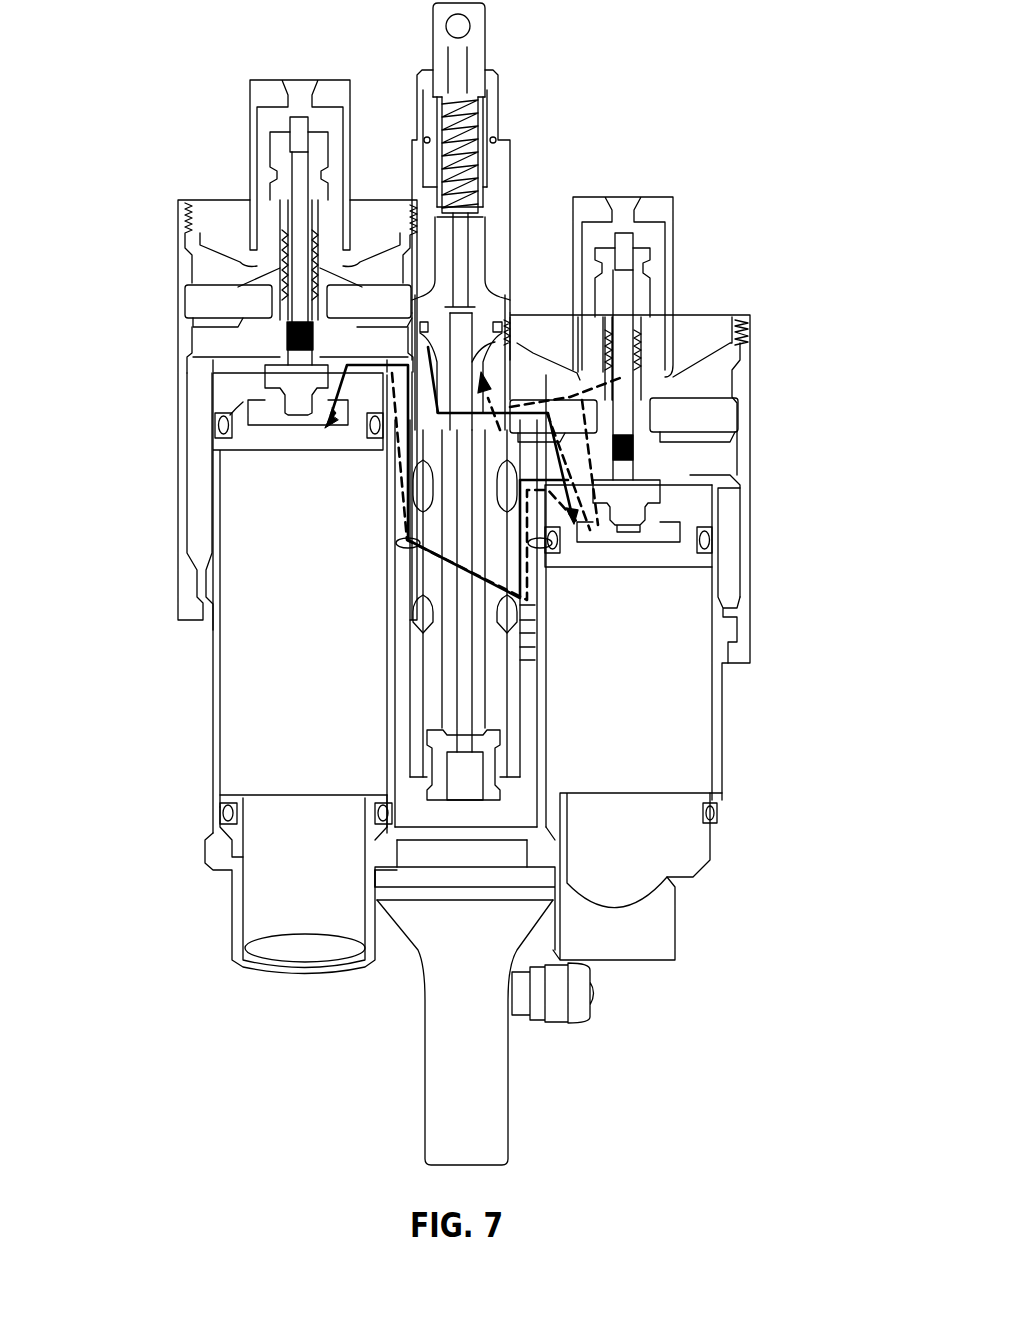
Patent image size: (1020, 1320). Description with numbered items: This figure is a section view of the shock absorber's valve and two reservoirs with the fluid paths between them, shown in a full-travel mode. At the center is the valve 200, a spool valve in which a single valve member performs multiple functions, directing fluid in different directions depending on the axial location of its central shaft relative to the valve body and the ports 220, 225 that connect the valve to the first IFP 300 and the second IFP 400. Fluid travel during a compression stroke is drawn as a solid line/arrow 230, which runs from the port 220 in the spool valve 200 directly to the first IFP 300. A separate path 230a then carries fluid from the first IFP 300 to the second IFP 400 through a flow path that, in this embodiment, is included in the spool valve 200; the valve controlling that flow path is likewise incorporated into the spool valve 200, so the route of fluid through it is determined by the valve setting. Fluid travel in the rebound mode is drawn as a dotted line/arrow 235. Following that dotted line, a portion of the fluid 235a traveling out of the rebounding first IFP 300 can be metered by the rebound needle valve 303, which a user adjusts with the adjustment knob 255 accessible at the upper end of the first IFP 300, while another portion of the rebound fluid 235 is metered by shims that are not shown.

The valve 200 is at (465, 688).
The port 220 is at (438, 352).
The port 225 is at (492, 367).
The solid line/arrow 230 is at (428, 362).
The separate path 230a is at (342, 380).
The dotted line/arrow 235 is at (397, 472).
The portion of the fluid 235a is at (624, 414).
The adjustment knob 255 is at (673, 207).
The first IFP 300 is at (770, 558).
The rebound needle valve 303 is at (620, 289).
The IFP 400 is at (192, 757).